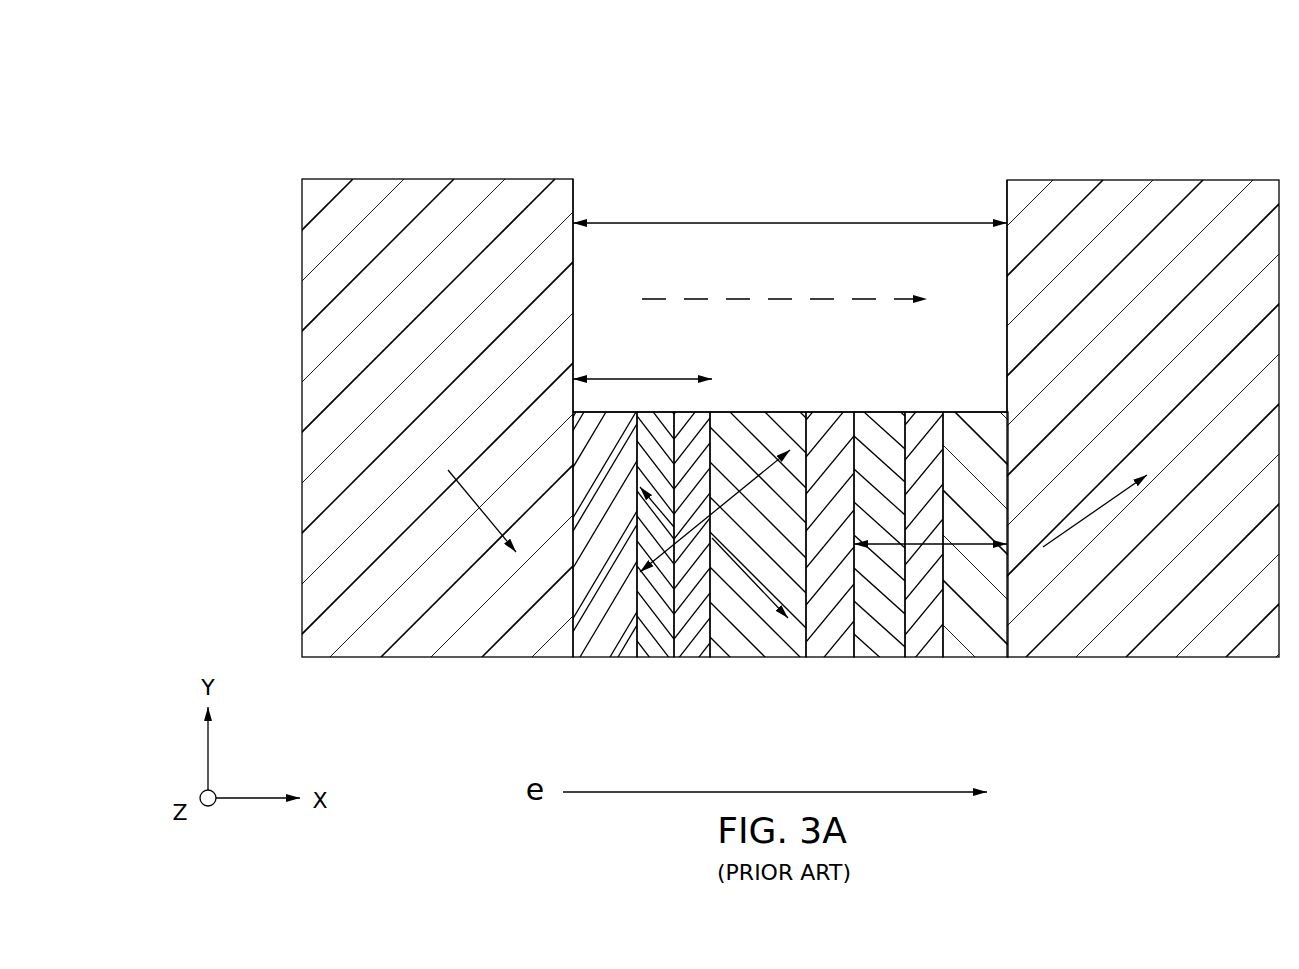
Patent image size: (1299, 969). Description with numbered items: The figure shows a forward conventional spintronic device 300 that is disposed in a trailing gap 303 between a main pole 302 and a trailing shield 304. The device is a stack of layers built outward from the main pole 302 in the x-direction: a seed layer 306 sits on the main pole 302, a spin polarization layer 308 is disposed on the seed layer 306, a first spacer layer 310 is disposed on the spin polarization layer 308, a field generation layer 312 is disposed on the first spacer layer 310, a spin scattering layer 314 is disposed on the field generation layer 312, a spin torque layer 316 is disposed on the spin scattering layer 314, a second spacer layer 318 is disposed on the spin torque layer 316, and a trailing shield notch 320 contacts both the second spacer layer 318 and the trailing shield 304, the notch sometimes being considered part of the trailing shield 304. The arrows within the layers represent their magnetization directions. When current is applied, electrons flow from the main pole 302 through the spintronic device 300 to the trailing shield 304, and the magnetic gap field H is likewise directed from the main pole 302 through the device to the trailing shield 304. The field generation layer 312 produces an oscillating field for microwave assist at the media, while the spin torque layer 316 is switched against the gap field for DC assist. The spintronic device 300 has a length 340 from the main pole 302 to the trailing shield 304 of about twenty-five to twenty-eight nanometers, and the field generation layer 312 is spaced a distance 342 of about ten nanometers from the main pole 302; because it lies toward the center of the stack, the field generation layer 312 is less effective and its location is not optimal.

The forward conventional spintronic device 300 is at (338, 73).
The main pole 302 is at (415, 431).
The trailing gap 303 is at (645, 150).
The trailing shield 304 is at (1118, 431).
The seed layer 306 is at (586, 551).
The spin polarization layer 308 is at (657, 645).
The first spacer layer 310 is at (695, 645).
The field generation layer 312 is at (746, 551).
The spin scattering layer 314 is at (832, 645).
The spin torque layer 316 is at (882, 645).
The second spacer layer 318 is at (925, 430).
The trailing shield notch 320 is at (1008, 613).
The length 340 is at (783, 223).
The distance 342 is at (643, 379).
The magnetic gap field H is at (780, 299).